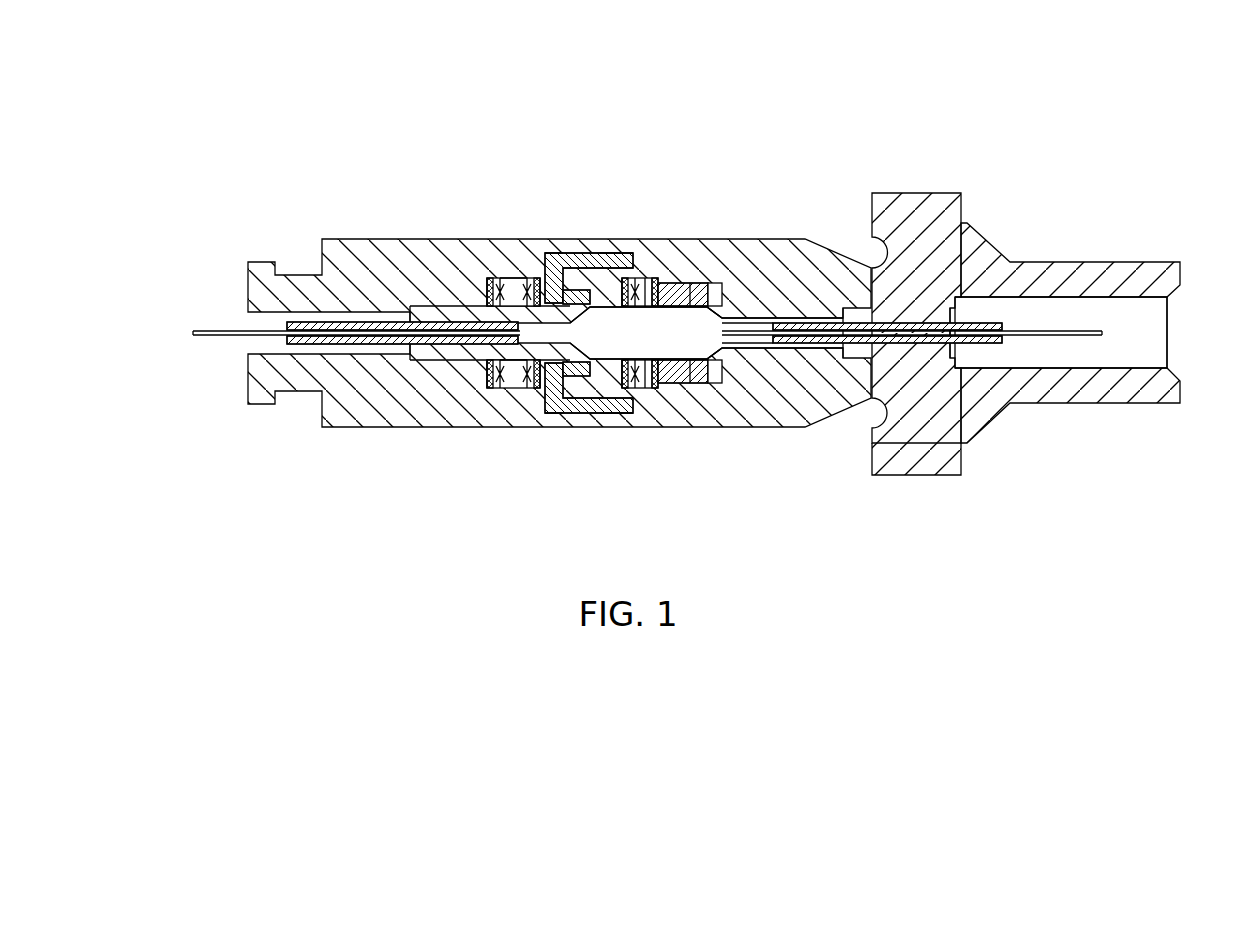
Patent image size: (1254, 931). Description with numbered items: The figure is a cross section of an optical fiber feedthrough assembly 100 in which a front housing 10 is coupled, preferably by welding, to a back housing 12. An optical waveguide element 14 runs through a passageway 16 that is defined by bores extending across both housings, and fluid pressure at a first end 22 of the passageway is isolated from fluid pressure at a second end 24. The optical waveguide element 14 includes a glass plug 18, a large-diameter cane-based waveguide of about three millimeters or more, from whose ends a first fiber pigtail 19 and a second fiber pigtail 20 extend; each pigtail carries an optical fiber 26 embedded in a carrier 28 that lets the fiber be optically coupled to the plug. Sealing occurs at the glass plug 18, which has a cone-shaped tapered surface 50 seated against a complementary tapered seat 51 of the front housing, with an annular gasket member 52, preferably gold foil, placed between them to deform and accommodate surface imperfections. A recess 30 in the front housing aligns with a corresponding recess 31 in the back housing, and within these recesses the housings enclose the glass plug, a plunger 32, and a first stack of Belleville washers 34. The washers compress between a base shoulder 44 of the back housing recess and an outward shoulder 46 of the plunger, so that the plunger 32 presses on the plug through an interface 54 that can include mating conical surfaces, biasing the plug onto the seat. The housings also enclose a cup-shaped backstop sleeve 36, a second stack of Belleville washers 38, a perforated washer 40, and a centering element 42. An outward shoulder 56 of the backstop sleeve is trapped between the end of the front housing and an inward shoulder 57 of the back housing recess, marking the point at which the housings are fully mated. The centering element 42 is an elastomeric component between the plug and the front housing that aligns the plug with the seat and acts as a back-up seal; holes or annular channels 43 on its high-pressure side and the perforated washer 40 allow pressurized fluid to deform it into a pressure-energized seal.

The optical fiber feedthrough assembly 100 is at (1102, 141).
The front housing 10 is at (925, 476).
The back housing 12 is at (387, 427).
The optical waveguide element 14 is at (1074, 320).
The passageway 16 is at (800, 322).
The glass plug 18 is at (688, 395).
The first fiber pigtail 19 is at (330, 322).
The second fiber pigtail 20 is at (983, 322).
The first end of the passageway 22 is at (1183, 327).
The second end of the passageway 24 is at (246, 344).
The optical fiber 26 is at (1063, 340).
The carrier 28 is at (1003, 343).
The recess 30 is at (613, 268).
The recess 31 is at (515, 270).
The plunger 32 is at (447, 427).
The first stack of Belleville washers 34 is at (505, 388).
The cup-shaped backstop sleeve 36 is at (583, 385).
The second stack of Belleville washers 38 is at (635, 390).
The perforated washer 40 is at (648, 388).
The centering element 42 is at (703, 384).
The holes or annular channels 43 is at (643, 268).
The base shoulder 44 is at (495, 268).
The outward shoulder 46 is at (525, 270).
The tapered surface 50 is at (752, 306).
The tapered seat 51 is at (737, 352).
The gasket member 52 is at (703, 314).
The interface 54 is at (552, 268).
The outward shoulder 56 is at (553, 413).
The inward shoulder 57 is at (548, 378).